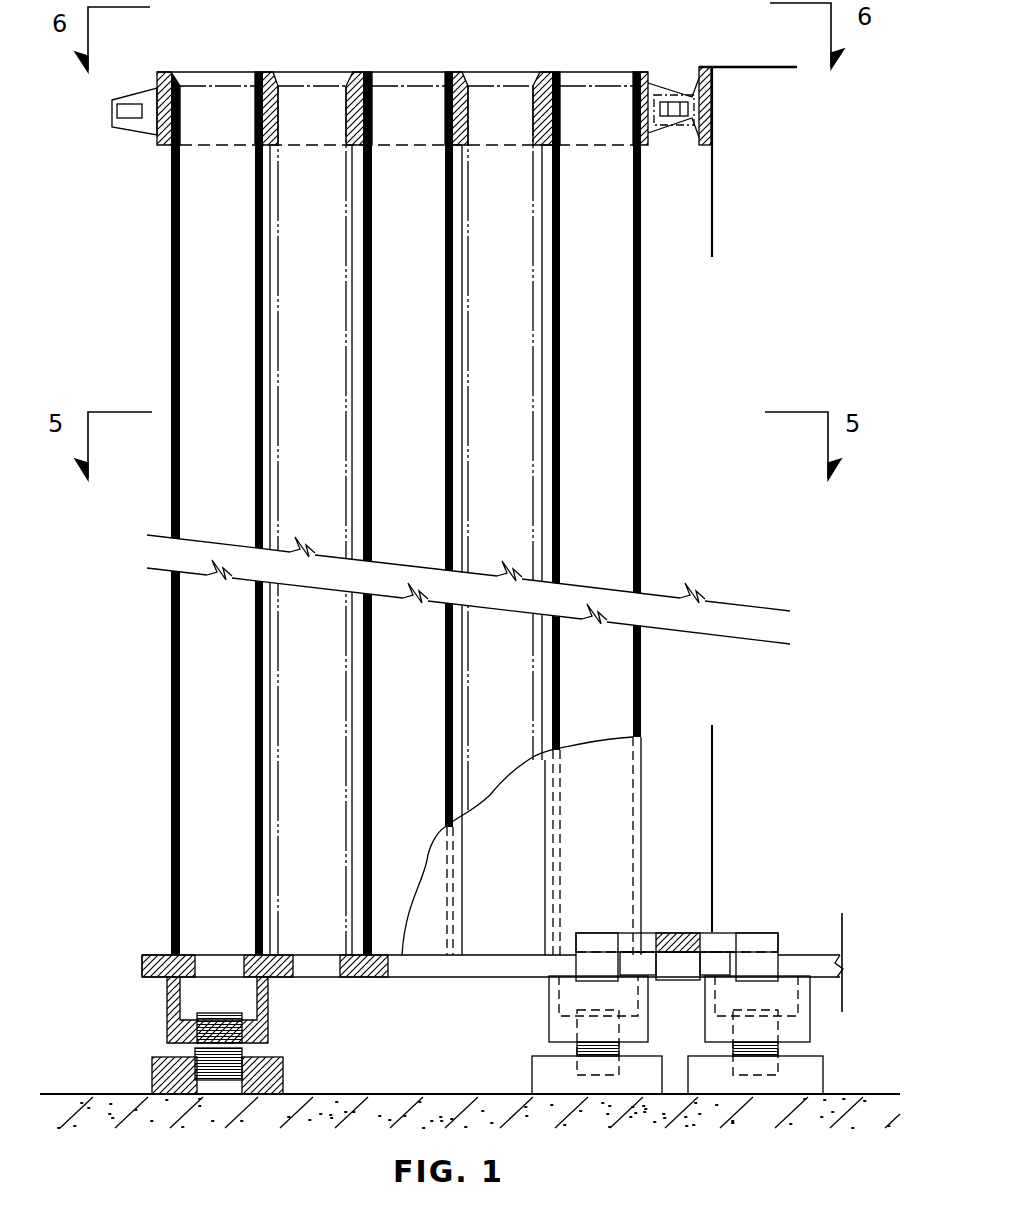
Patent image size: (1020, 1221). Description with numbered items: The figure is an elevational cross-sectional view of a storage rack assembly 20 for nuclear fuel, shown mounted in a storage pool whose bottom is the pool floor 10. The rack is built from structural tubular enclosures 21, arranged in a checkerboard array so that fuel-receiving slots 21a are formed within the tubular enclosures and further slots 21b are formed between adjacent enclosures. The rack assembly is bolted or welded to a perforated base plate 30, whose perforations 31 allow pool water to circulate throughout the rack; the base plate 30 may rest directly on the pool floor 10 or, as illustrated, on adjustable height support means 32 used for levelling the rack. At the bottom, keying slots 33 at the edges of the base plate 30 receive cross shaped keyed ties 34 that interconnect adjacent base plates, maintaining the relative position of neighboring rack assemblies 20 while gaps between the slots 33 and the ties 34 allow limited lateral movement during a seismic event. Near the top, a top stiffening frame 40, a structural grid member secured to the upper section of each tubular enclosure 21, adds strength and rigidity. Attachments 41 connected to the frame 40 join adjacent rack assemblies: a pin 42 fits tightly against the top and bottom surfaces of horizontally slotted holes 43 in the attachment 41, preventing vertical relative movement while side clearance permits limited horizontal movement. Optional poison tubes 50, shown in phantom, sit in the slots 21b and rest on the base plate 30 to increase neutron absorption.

The storage pool bottom 10 is at (398, 1094).
The rack assembly 20 is at (822, 143).
The tubular enclosure 21 is at (182, 712).
The slot within tubular enclosure 21a is at (236, 459).
The slot between tubular enclosures 21b is at (333, 411).
The base plate 30 is at (352, 977).
The perforation 31 is at (198, 957).
The adjustable height support means 32 is at (268, 1025).
The keying slot 33 is at (576, 960).
The cross shaped keyed tie 34 is at (740, 933).
The top stiffening frame 40 is at (166, 72).
The attachment 41 is at (152, 135).
The pin 42 is at (673, 118).
The horizontally slotted hole 43 is at (122, 103).
The poison tube 50 is at (280, 745).